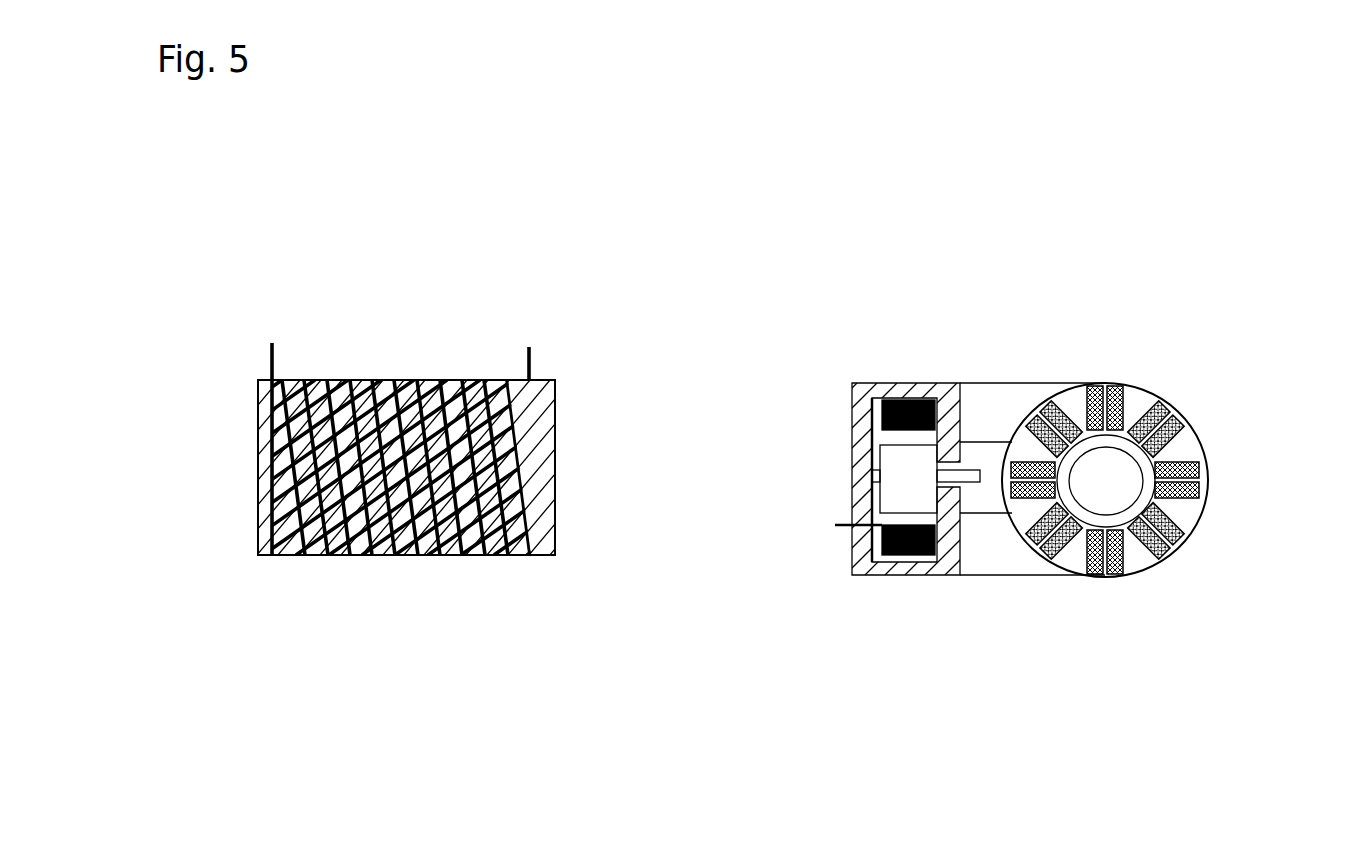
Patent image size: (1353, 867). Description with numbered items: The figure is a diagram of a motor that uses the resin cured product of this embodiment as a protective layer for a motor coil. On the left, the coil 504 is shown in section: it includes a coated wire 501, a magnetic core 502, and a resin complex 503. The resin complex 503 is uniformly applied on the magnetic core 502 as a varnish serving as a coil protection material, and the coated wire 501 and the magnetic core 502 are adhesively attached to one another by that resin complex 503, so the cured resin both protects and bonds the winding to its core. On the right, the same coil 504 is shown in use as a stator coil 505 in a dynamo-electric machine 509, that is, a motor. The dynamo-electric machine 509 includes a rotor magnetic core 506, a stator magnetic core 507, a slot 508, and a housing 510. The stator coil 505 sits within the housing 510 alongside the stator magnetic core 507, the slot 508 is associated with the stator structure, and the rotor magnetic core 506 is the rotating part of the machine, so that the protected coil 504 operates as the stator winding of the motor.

The coated wire 501 is at (532, 360).
The magnetic core 502 is at (555, 462).
The resin complex 503 is at (540, 505).
The coil 504 is at (300, 555).
The stator coil 505 is at (903, 398).
The rotor magnetic core 506 is at (1103, 475).
The stator magnetic core 507 is at (1135, 407).
The slot 508 is at (1195, 478).
The dynamo-electric machine 509 is at (920, 577).
The housing 510 is at (860, 440).